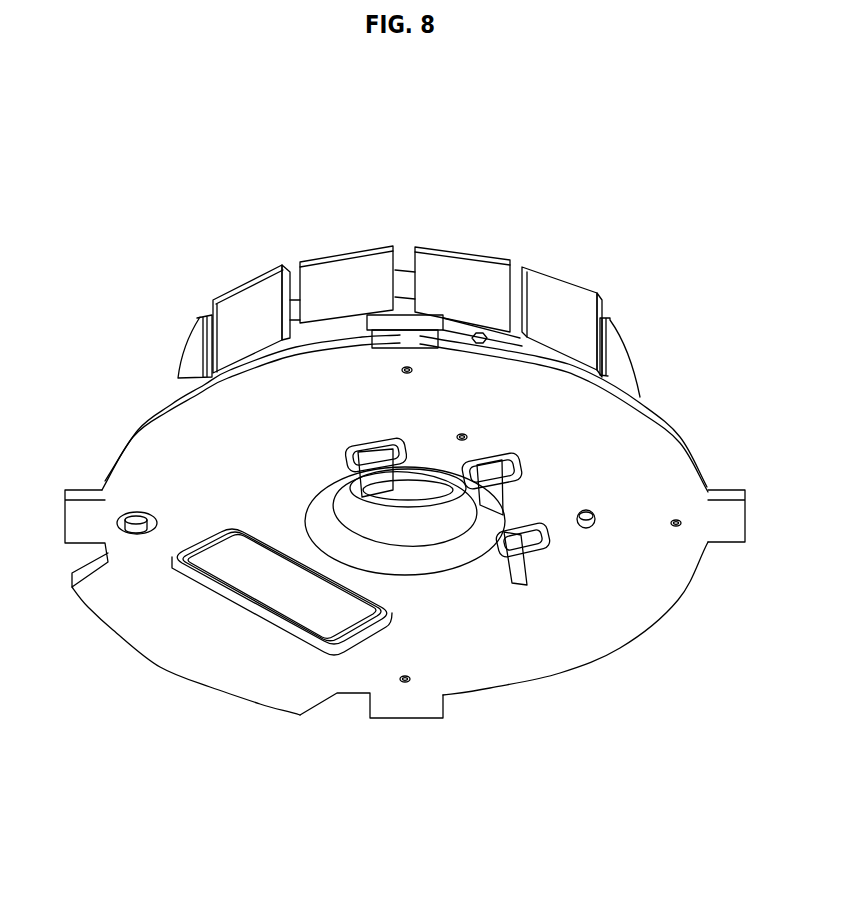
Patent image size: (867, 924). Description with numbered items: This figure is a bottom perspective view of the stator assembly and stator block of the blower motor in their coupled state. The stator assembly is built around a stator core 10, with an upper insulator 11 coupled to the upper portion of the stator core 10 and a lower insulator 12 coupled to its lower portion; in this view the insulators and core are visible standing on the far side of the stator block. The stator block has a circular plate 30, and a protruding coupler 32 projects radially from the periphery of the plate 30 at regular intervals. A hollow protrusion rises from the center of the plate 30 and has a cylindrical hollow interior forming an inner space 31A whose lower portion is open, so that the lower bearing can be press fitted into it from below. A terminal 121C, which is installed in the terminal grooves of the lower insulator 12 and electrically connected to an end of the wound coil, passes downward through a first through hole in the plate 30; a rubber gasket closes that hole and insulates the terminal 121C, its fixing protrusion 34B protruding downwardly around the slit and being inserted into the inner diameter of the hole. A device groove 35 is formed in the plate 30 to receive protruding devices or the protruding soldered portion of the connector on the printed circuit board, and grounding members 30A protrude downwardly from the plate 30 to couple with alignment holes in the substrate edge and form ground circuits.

The stator core 10 is at (490, 260).
The upper insulator 11 is at (457, 243).
The lower insulator 12 is at (470, 330).
The plate 30 is at (620, 648).
The grounding members 30A is at (132, 510).
The inner space 31A is at (435, 507).
The protruding coupler 32 is at (727, 533).
The fixing protrusion 34B is at (357, 450).
The device groove 35 is at (250, 580).
The terminal 121C is at (372, 473).